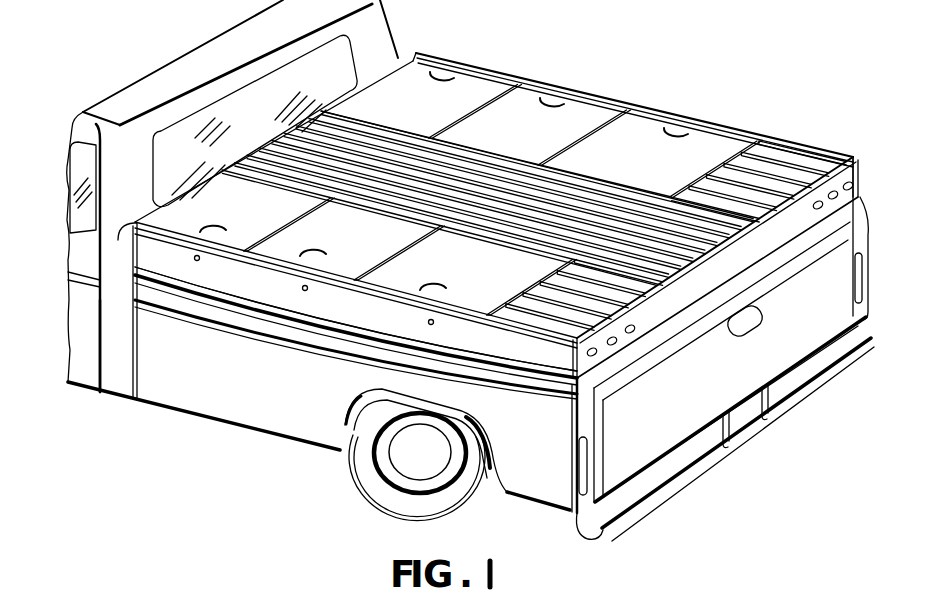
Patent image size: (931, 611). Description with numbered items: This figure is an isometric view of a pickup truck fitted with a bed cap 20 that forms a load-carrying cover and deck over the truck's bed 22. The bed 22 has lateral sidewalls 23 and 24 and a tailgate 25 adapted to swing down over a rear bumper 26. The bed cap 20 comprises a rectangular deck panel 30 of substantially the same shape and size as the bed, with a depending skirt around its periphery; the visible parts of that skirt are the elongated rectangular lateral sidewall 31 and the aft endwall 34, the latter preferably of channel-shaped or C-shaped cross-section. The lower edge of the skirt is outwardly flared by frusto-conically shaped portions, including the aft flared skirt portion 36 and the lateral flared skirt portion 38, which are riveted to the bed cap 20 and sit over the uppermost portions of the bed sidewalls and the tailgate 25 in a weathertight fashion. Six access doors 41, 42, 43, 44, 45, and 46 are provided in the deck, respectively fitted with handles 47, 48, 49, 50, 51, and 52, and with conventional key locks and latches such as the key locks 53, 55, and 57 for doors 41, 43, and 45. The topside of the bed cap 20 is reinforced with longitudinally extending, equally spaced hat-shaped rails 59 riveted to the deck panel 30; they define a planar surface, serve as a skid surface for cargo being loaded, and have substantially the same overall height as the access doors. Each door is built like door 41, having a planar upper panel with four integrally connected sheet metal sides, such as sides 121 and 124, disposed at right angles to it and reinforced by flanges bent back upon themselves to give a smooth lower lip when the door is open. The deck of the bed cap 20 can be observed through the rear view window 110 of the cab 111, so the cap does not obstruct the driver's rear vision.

The bed cap 20 is at (600, 96).
The bed 22 is at (470, 280).
The lateral sidewall 23 is at (308, 397).
The lateral sidewall 24 is at (864, 200).
The tailgate 25 is at (697, 398).
The rear bumper 26 is at (597, 521).
The deck panel 30 is at (565, 332).
The lateral sidewall 31 is at (370, 314).
The aft endwall 34 is at (731, 285).
The aft flared skirt portion 36 is at (695, 306).
The lateral flared skirt portion 38 is at (325, 316).
The access door 41 is at (250, 205).
The access door 42 is at (420, 110).
The access door 43 is at (392, 245).
The access door 44 is at (538, 136).
The access door 45 is at (508, 273).
The access door 46 is at (668, 166).
The handle 47 is at (200, 230).
The handle 48 is at (453, 66).
The handle 49 is at (326, 232).
The handle 50 is at (551, 94).
The handle 51 is at (435, 286).
The handle 52 is at (676, 124).
The key lock 53 is at (195, 258).
The key lock 55 is at (303, 288).
The key lock 57 is at (433, 322).
The rails 59 is at (804, 155).
The rear view window 110 is at (266, 126).
The cab 111 is at (125, 260).
The sheet metal side 121 is at (118, 346).
The sheet metal side 124 is at (283, 228).